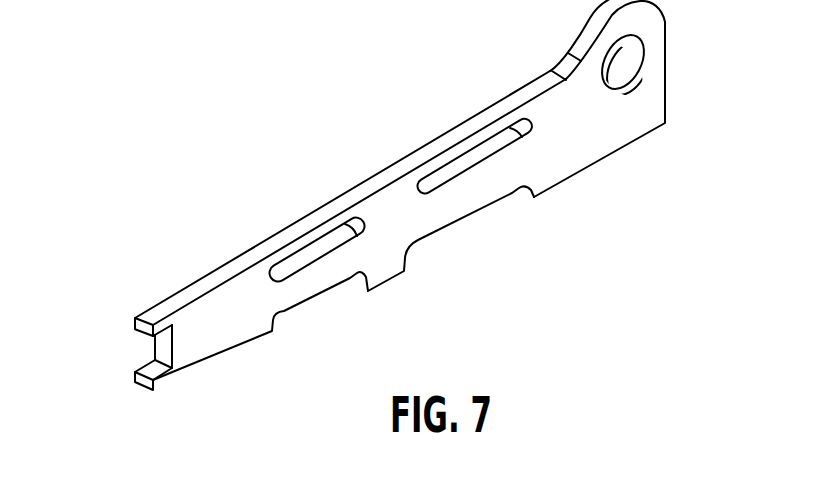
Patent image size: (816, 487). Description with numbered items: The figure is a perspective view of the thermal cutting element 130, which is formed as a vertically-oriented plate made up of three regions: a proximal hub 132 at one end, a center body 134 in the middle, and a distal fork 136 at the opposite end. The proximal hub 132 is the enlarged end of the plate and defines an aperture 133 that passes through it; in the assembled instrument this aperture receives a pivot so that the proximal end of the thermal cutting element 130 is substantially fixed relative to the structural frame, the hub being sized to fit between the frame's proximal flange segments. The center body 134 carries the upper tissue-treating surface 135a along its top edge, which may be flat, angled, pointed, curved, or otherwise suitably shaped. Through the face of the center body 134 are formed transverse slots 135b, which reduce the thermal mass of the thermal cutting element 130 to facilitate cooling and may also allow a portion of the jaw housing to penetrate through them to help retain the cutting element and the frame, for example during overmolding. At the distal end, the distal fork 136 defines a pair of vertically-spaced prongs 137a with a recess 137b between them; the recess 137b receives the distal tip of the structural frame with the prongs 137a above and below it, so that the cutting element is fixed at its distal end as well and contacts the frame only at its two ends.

The thermal cutting element 130 is at (518, 225).
The proximal hub 132 is at (637, 123).
The aperture 133 is at (623, 58).
The center body 134 is at (385, 200).
The tissue-treating surface 135a is at (228, 265).
The transverse slots 135b is at (428, 182).
The distal fork 136 is at (135, 313).
The prongs 137a is at (163, 328).
The recess 137b is at (148, 348).